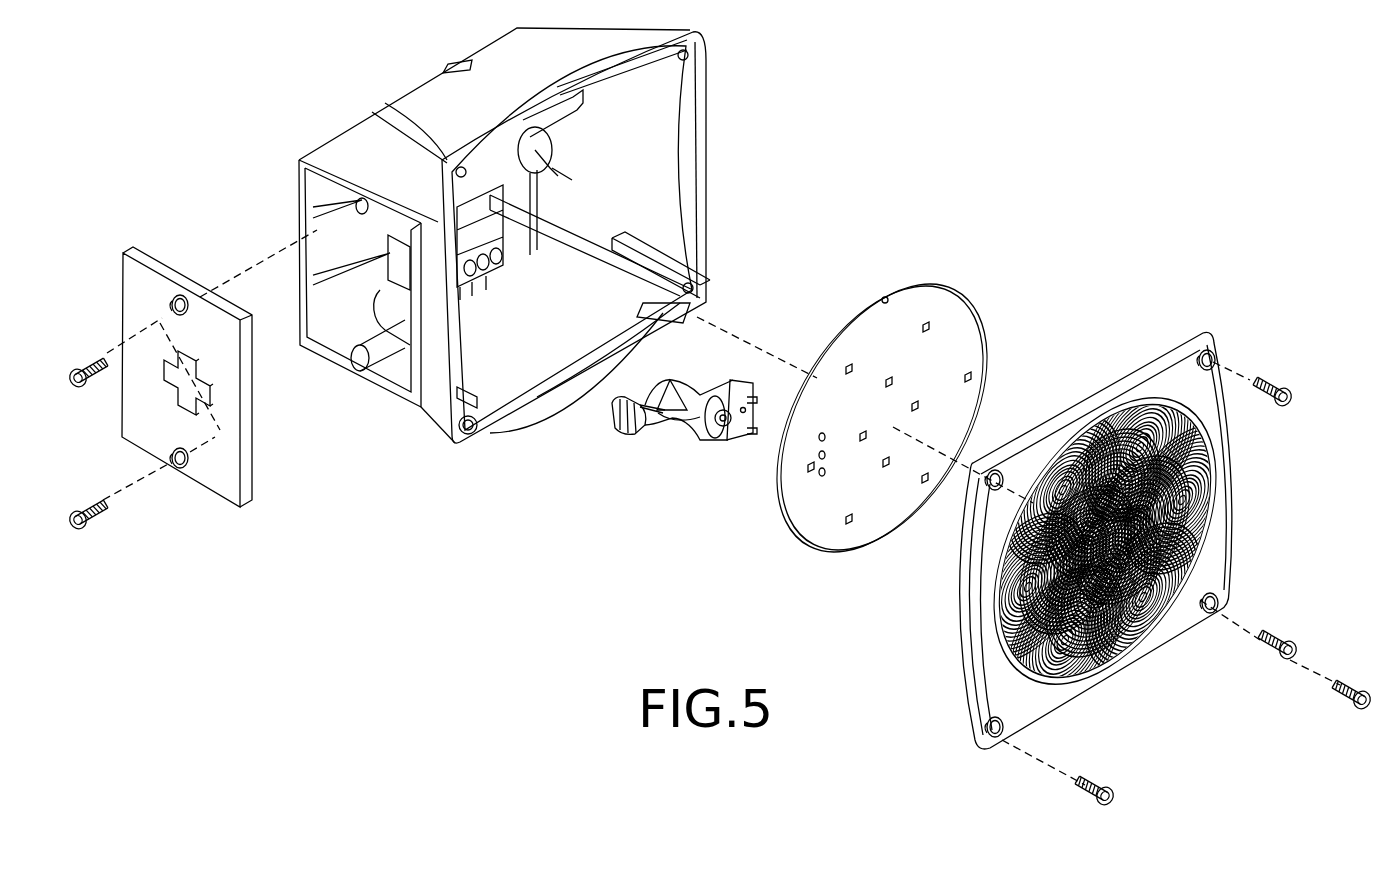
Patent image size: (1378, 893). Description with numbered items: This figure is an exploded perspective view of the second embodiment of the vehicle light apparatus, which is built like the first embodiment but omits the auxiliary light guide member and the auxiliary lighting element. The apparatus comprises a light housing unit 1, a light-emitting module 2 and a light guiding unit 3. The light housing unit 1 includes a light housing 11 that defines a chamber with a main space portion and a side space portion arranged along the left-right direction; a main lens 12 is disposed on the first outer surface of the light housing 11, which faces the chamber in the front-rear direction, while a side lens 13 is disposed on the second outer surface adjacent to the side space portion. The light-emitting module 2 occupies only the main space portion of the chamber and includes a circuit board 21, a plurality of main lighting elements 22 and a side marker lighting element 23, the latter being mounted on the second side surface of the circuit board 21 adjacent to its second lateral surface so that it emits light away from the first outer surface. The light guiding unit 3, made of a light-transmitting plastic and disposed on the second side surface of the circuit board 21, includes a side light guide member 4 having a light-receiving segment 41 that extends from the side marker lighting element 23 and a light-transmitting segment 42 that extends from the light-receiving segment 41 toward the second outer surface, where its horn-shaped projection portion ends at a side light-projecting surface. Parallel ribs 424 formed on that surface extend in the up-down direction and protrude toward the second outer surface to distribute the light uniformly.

The light housing unit 1 is at (727, 63).
The light housing 11 is at (716, 160).
The main lens 12 is at (1140, 365).
The side lens 13 is at (212, 435).
The light-emitting module 2 is at (1005, 240).
The circuit board 21 is at (950, 300).
The main lighting elements 22 is at (962, 375).
The side marker lighting element 23 is at (800, 470).
The light guiding unit 3 is at (666, 425).
The side light guide member 4 is at (627, 445).
The light-receiving segment 41 is at (697, 400).
The light-transmitting segment 42 is at (648, 392).
The parallel ribs 424 is at (612, 418).